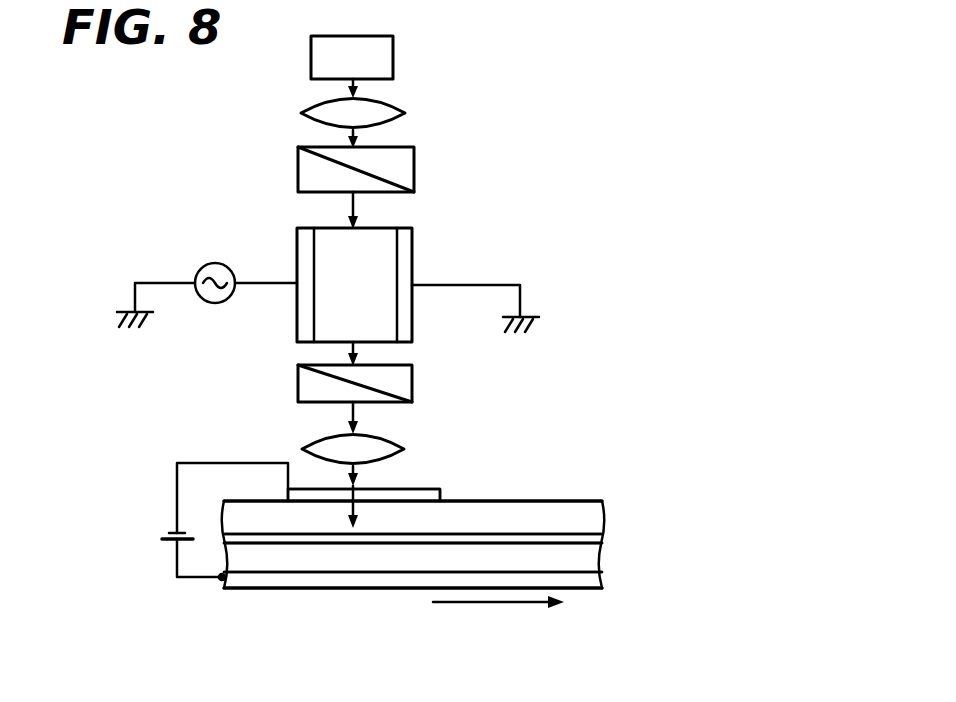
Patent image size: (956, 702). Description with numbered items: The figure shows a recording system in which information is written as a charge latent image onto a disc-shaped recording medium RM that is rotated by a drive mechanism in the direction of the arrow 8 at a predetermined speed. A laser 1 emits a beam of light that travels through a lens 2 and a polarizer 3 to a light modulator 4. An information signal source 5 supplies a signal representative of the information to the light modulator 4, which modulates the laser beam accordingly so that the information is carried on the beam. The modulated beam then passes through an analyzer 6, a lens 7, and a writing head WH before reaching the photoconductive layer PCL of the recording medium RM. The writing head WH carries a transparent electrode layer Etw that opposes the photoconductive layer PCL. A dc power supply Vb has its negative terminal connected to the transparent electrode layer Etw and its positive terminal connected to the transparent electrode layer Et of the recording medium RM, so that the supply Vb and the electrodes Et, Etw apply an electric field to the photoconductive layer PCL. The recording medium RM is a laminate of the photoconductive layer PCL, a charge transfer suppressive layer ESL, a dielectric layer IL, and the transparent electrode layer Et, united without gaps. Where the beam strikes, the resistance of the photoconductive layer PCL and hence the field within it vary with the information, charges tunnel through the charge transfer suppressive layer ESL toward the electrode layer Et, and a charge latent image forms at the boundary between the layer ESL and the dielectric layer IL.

The laser 1 is at (391, 49).
The lens 2 is at (392, 106).
The polarizer 3 is at (402, 166).
The light modulator 4 is at (404, 248).
The information signal source 5 is at (216, 263).
The analyzer 6 is at (402, 373).
The lens 7 is at (392, 442).
The arrow 8 is at (510, 605).
The writing head WH is at (310, 476).
The dc power supply Vb is at (160, 536).
The transparent electrode layer Etw is at (440, 492).
The charge latent image recording medium RM is at (560, 499).
The photoconductive layer PCL is at (586, 514).
The charge transfer suppressive layer ESL is at (604, 537).
The dielectric layer IL is at (592, 561).
The transparent electrode layer Et is at (598, 583).